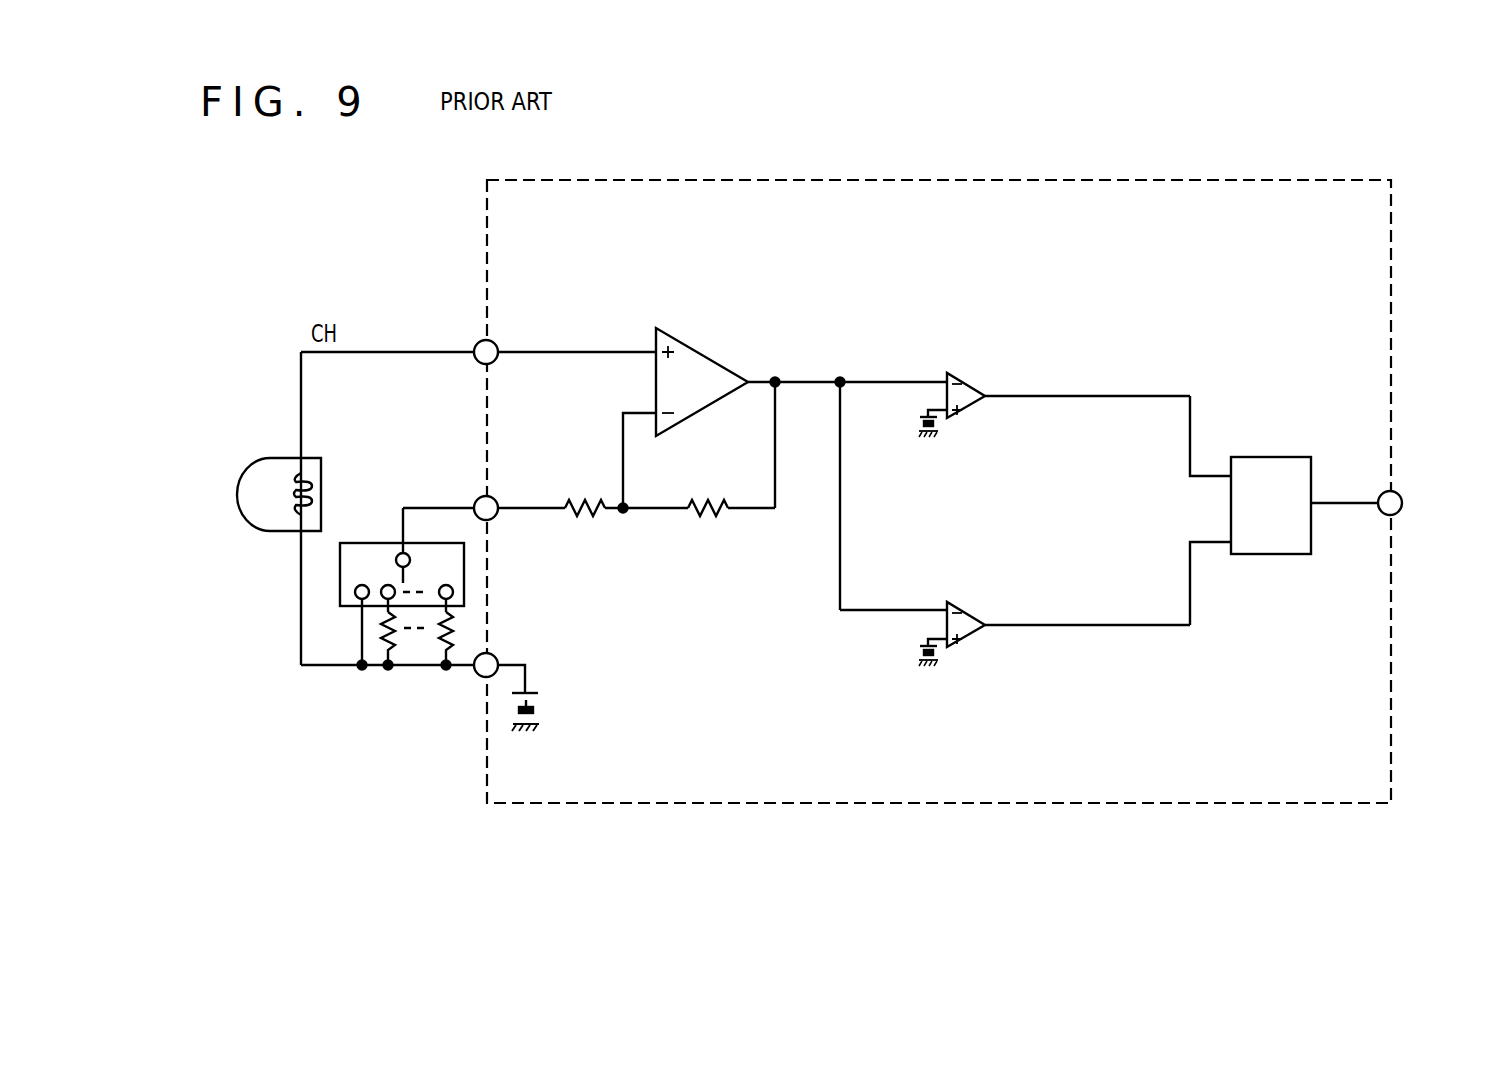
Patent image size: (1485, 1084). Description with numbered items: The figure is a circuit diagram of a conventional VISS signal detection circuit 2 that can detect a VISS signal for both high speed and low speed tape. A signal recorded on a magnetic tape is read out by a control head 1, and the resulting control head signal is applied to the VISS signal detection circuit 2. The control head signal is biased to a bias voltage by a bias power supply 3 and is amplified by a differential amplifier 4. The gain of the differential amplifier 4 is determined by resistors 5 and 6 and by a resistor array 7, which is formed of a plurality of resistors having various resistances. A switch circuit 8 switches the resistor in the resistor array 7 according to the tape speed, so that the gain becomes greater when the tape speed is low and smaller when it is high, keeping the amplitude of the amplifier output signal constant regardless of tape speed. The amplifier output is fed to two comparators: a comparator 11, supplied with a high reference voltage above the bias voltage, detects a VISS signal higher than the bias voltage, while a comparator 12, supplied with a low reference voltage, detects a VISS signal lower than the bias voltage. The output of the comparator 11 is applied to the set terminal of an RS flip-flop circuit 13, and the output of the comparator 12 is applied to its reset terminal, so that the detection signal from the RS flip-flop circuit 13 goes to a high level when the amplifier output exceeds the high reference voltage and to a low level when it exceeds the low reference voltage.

The control head 1 is at (271, 457).
The VISS signal detection circuit 2 is at (1243, 178).
The bias power supply 3 is at (545, 703).
The differential amplifier 4 is at (694, 348).
The resistor 5 is at (583, 518).
The resistor 6 is at (706, 518).
The resistor array 7 is at (460, 628).
The switch circuit 8 is at (464, 574).
The comparator 11 is at (971, 384).
The comparator 12 is at (971, 613).
The RS flip-flop circuit 13 is at (1278, 455).